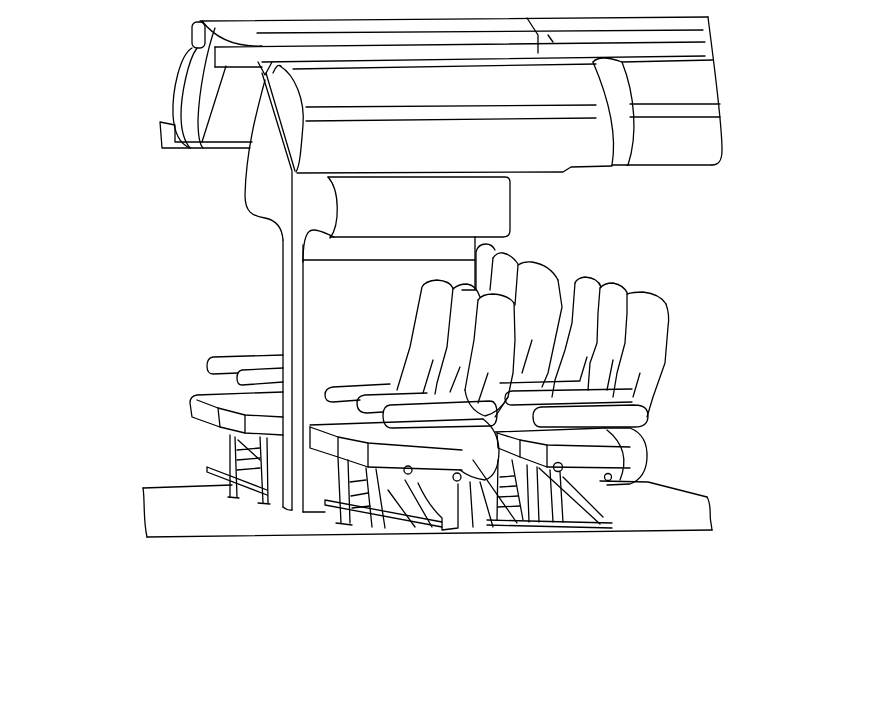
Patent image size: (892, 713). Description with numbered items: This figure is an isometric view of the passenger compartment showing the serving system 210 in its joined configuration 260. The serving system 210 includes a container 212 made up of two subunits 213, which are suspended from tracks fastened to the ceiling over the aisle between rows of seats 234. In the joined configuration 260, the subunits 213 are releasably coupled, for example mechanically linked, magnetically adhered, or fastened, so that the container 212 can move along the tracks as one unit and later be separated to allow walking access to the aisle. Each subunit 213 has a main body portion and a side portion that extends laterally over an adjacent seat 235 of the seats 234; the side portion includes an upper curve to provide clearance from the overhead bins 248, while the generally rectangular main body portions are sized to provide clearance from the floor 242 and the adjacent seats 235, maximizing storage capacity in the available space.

The serving system 210 is at (157, 265).
The container 212 is at (185, 221).
The subunits 213 is at (258, 175).
The seats 234 is at (655, 327).
The adjacent seat 235 is at (433, 297).
The floor 242 is at (685, 503).
The overhead bins 248 is at (698, 83).
The joined configuration 260 is at (267, 250).